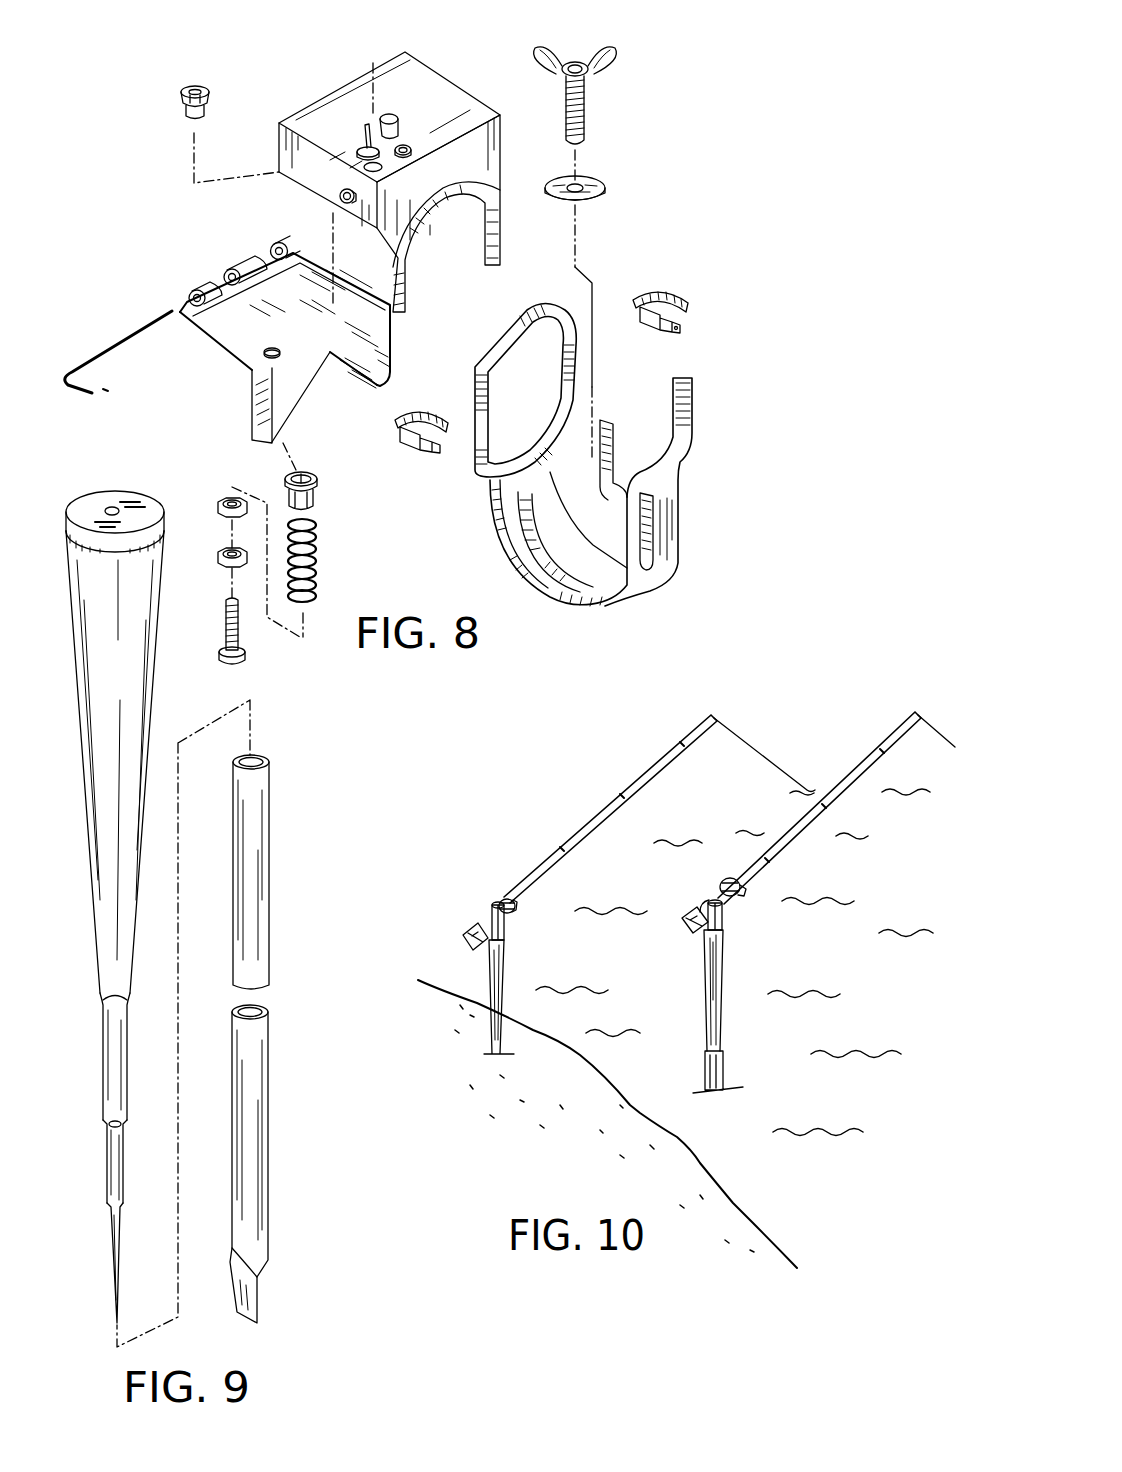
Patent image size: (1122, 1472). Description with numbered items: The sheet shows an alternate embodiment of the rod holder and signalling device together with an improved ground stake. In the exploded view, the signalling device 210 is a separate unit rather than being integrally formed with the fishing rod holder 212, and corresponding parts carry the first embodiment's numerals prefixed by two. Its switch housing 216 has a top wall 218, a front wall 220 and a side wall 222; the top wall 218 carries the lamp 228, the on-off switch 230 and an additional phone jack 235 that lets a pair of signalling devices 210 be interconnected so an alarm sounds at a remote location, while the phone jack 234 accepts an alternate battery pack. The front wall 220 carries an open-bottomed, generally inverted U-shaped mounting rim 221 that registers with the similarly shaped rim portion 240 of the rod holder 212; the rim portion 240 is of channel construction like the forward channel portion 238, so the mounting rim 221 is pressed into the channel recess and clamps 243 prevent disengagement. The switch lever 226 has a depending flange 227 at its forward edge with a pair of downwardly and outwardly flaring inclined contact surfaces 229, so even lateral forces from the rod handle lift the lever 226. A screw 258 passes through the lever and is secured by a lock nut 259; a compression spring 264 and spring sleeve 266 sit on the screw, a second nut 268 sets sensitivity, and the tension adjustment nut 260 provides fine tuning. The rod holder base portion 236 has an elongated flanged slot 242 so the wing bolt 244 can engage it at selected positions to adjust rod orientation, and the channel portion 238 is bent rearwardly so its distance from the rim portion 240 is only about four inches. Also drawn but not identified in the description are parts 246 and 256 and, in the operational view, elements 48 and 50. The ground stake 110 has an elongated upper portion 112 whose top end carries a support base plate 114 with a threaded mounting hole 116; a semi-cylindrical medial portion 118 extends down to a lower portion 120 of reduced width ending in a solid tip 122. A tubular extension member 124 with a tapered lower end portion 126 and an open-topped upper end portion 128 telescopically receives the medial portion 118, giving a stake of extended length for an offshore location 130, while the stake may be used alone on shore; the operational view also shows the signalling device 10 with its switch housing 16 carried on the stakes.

In FIG. 8, the signalling device 210 is at (430, 53).
In FIG. 8, the switch housing 216 is at (343, 85).
In FIG. 8, the top wall 218 is at (447, 110).
In FIG. 8, the front wall 220 is at (497, 140).
In FIG. 8, the mounting rim 221 is at (500, 243).
In FIG. 8, the side wall 222 is at (283, 172).
In FIG. 8, the switch lever 226 is at (267, 333).
In FIG. 8, the depending flange 227 is at (292, 392).
In FIG. 8, the lamp 228 is at (389, 115).
In FIG. 8, the inclined contact surfaces 229 is at (350, 375).
In FIG. 8, the on-off switch 230 is at (360, 143).
In FIG. 8, the phone jack 234 is at (347, 207).
In FIG. 8, the phone jack 235 is at (417, 152).
In FIG. 8, the rod holder base portion 236 is at (636, 572).
In FIG. 8, the channel portion 238 is at (693, 405).
In FIG. 8, the rim portion 240 is at (473, 462).
In FIG. 8, the flanged slot 242 is at (563, 573).
In FIG. 8, the clamps 243 is at (667, 290).
In FIG. 8, the wing bolt 244 is at (587, 120).
In FIG. 8, the washer 246 is at (603, 188).
In FIG. 8, the wire pin 256 is at (118, 332).
In FIG. 8, the screw 258 is at (237, 637).
In FIG. 8, the lock nut 259 is at (220, 562).
In FIG. 8, the tension adjustment nut 260 is at (210, 90).
In FIG. 8, the compression spring 264 is at (318, 557).
In FIG. 8, the spring sleeve 266 is at (326, 503).
In FIG. 8, the second nut 268 is at (220, 514).
In FIG. 8, the fishing rod holder 212 is at (705, 457).
In FIG. 9, the ground stake 110 is at (70, 490).
In FIG. 10, the ground stake 110 is at (723, 992).
In FIG. 9, the upper portion 112 is at (72, 627).
In FIG. 10, the upper portion 112 is at (504, 976).
In FIG. 9, the support base plate 114 is at (143, 513).
In FIG. 9, the threaded mounting hole 116 is at (115, 502).
In FIG. 9, the medial portion 118 is at (113, 1037).
In FIG. 9, the lower portion 120 is at (107, 1160).
In FIG. 9, the solid tip 122 is at (110, 1257).
In FIG. 9, the tubular extension member 124 is at (270, 890).
In FIG. 9, the tapered lower end portion 126 is at (257, 1305).
In FIG. 9, the upper end portion 128 is at (263, 762).
In FIG. 10, the offshore location 130 is at (729, 1083).
In FIG. 10, the signalling device 10 is at (507, 933).
In FIG. 10, the switch housing 16 is at (469, 925).
In FIG. 10, the pipe 48 is at (771, 854).
In FIG. 10, the roller 50 is at (723, 883).